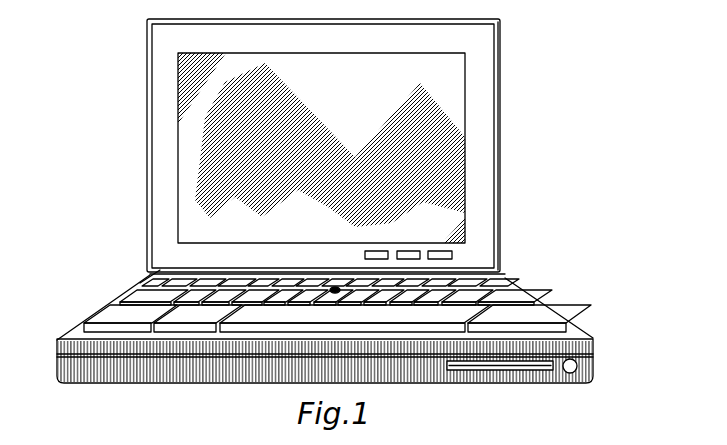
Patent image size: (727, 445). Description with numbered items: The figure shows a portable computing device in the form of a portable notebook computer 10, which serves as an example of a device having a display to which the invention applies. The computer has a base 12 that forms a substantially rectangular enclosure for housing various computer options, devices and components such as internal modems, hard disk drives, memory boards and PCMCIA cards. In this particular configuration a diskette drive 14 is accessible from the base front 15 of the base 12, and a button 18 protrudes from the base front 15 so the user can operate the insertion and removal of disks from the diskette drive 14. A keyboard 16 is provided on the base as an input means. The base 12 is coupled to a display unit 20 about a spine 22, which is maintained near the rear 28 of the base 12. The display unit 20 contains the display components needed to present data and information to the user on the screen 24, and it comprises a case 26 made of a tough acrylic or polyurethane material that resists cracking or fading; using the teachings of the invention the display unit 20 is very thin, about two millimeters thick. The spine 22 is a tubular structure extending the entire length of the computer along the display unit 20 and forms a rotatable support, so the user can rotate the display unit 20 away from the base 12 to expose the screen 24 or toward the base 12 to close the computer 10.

The portable notebook computer 10 is at (72, 404).
The base 12 is at (210, 384).
The diskette drive 14 is at (462, 371).
The base front 15 is at (395, 368).
The keyboard 16 is at (530, 289).
The button 18 is at (576, 363).
The display unit 20 is at (501, 62).
The spine 22 is at (503, 274).
The screen 24 is at (372, 110).
The case 26 is at (480, 20).
The rear 28 is at (140, 286).